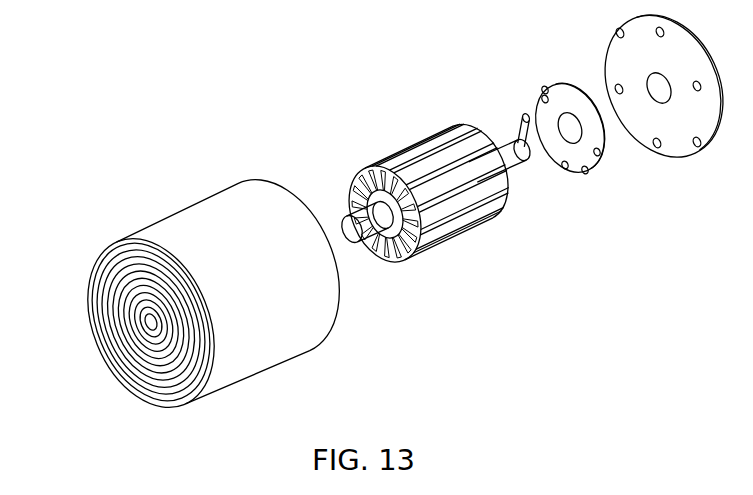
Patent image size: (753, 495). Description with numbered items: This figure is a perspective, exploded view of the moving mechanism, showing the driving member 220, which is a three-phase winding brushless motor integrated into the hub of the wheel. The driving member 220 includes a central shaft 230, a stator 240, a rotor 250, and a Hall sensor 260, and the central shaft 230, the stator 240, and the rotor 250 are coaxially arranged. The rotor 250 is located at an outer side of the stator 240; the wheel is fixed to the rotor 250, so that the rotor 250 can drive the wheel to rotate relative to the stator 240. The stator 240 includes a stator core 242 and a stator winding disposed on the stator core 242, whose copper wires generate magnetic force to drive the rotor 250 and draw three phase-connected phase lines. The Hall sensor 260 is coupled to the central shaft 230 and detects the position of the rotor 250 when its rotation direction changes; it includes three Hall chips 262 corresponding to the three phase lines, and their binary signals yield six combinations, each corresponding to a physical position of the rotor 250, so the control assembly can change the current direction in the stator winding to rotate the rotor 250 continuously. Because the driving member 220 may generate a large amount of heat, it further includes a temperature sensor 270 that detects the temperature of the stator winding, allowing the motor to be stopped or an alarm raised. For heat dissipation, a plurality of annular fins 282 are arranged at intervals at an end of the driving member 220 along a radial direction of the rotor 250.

The driving member 220 is at (98, 90).
The central shaft 230 is at (352, 220).
The stator 240 is at (415, 137).
The stator core 242 is at (437, 233).
The rotor 250 is at (193, 215).
The Hall sensor 260 is at (713, 198).
The Hall chips 262 is at (563, 167).
The temperature sensor 270 is at (545, 92).
The fins 282 is at (120, 280).